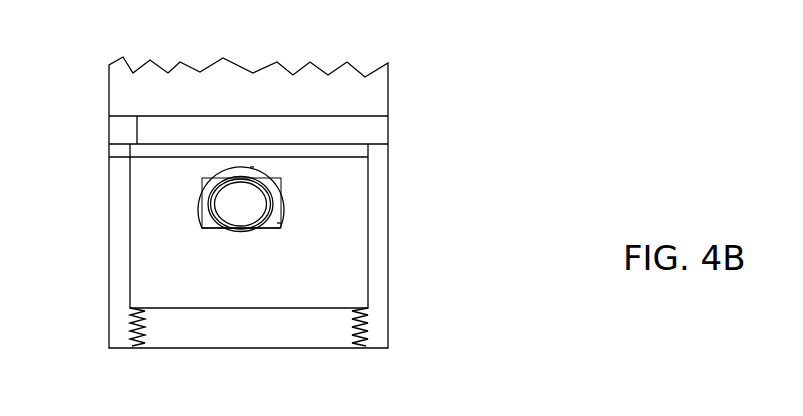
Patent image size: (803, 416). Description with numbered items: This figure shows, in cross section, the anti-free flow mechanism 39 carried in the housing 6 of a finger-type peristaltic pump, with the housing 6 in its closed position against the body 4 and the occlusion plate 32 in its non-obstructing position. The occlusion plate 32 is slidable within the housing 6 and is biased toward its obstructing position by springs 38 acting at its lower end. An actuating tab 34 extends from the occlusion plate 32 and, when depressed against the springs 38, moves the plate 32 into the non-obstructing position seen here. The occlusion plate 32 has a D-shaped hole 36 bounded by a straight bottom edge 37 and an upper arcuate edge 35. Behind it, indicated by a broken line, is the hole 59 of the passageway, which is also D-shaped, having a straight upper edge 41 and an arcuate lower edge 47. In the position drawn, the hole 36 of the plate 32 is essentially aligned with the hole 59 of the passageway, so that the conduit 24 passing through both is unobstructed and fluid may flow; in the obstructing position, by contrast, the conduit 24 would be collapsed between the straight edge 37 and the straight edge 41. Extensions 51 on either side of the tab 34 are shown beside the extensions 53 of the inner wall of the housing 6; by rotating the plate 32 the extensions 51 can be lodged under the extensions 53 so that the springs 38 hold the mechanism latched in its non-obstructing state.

The body 4 is at (123, 88).
The housing 6 is at (109, 322).
The conduit 24 is at (260, 203).
The occlusion plate 32 is at (342, 283).
The actuating tab 34 is at (328, 152).
The upper arcuate edge 35 is at (252, 167).
The D-shaped hole 36 is at (277, 223).
The straight bottom edge 37 is at (202, 230).
The springs 38 is at (145, 325).
The anti-free flow mechanism 39 is at (427, 82).
The straight upper edge 41 is at (225, 175).
The arcuate lower edge 47 is at (243, 233).
The extensions 51 is at (120, 152).
The extensions of the inner wall of the housing 53 is at (127, 135).
The hole 59 is at (200, 183).